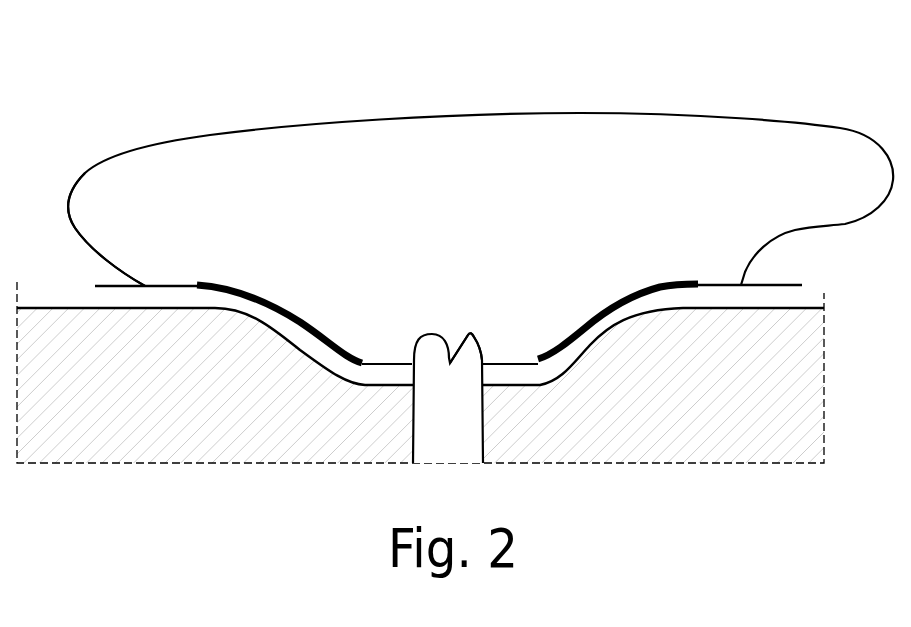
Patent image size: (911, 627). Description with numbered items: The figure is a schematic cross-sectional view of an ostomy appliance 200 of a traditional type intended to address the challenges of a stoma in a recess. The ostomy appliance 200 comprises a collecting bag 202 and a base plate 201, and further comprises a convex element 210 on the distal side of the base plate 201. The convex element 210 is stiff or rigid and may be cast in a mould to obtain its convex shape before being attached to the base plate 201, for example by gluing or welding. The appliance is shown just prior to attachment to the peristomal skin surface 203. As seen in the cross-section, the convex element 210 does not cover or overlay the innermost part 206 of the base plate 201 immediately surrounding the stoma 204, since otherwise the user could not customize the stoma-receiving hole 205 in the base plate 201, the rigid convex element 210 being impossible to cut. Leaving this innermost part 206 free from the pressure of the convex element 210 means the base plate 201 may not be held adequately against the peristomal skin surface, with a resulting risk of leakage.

The ostomy appliance 200 is at (88, 160).
The base plate 201 is at (187, 285).
The collecting bag 202 is at (718, 117).
The peristomal skin surface 203 is at (362, 382).
The stoma 204 is at (473, 353).
The stoma-receiving hole 205 is at (407, 363).
The innermost part of the base plate 206 is at (379, 363).
The convex element 210 is at (250, 290).